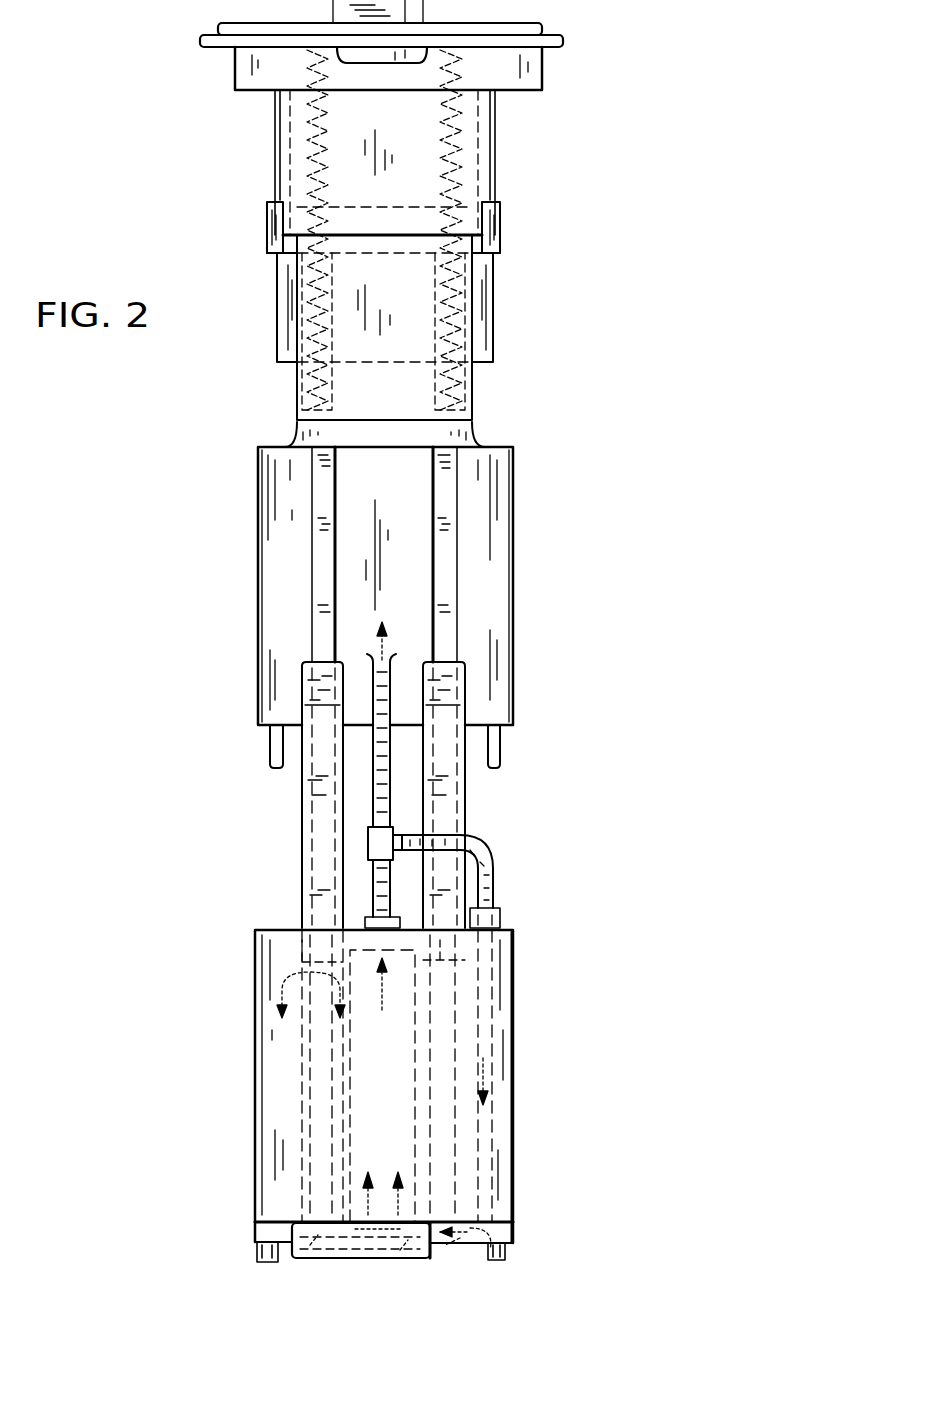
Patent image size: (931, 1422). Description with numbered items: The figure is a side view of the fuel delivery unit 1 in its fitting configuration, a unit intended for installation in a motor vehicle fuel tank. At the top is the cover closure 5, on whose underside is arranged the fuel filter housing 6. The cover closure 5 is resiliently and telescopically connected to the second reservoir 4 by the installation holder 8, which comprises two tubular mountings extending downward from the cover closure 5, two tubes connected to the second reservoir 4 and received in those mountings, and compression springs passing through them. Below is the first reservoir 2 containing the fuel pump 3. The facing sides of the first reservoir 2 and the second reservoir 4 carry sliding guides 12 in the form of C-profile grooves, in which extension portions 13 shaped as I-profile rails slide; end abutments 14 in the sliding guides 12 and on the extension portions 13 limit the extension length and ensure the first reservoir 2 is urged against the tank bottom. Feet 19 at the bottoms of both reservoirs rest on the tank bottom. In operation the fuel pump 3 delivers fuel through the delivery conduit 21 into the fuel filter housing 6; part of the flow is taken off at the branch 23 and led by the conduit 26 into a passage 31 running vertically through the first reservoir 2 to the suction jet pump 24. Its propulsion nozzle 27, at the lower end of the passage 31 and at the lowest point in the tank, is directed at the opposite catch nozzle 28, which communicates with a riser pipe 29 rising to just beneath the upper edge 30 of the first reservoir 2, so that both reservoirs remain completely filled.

The fuel delivery unit 1 is at (523, 512).
The first reservoir 2 is at (517, 1085).
The fuel pump 3 is at (400, 1055).
The second reservoir 4 is at (505, 478).
The cover closure 5 is at (508, 62).
The fuel filter housing 6 is at (492, 295).
The installation holder 8 is at (473, 383).
The sliding guides 12 is at (325, 575).
The extension portions 13 is at (300, 827).
The end abutments 14 is at (318, 680).
The feet 19 is at (272, 773).
The delivery conduit 21 is at (380, 750).
The branch 23 is at (375, 847).
The suction jet pump 24 is at (477, 1262).
The conduit 26 is at (473, 852).
The propulsion nozzle 27 is at (460, 1255).
The catch nozzle 28 is at (405, 1248).
The riser pipe 29 is at (312, 1208).
The upper edge 30 is at (275, 932).
The passage 31 is at (483, 1150).